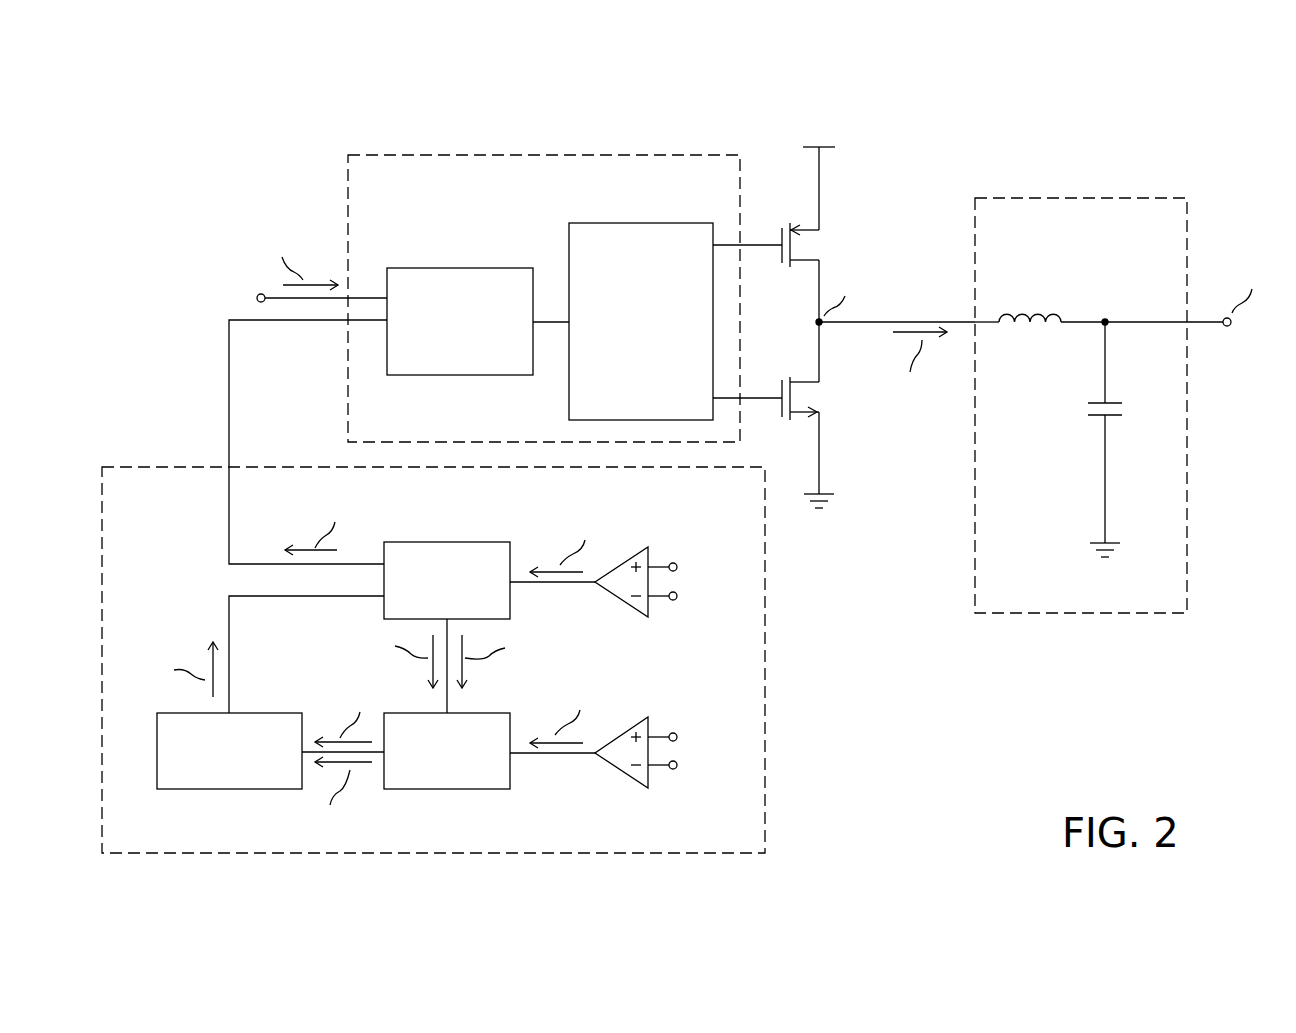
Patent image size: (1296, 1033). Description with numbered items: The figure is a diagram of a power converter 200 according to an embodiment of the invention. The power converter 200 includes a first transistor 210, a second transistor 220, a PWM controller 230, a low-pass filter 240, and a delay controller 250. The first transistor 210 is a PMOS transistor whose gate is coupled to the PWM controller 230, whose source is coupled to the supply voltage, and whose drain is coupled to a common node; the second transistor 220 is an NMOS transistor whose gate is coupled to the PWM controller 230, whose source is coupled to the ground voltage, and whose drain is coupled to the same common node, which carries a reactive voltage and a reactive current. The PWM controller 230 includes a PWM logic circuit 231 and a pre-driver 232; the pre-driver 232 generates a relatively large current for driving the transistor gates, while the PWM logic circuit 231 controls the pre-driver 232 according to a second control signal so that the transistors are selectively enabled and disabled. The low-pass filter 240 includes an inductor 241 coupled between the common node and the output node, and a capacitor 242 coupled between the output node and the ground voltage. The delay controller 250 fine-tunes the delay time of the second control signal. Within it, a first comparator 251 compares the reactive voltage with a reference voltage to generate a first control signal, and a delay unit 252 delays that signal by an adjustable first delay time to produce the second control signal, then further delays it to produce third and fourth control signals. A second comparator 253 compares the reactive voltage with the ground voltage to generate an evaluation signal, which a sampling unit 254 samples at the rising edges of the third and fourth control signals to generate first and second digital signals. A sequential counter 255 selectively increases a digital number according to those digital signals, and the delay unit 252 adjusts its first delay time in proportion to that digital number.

The power converter 200 is at (208, 134).
The PWM controller 230 is at (533, 155).
The PWM logic circuit 231 is at (462, 268).
The pre-driver 232 is at (643, 223).
The first transistor 210 is at (820, 247).
The second transistor 220 is at (821, 395).
The low-pass filter 240 is at (1095, 197).
The inductor 241 is at (1032, 311).
The capacitor 242 is at (1119, 400).
The delay controller 250 is at (143, 467).
The first comparator 251 is at (620, 600).
The delay unit 252 is at (453, 542).
The second comparator 253 is at (620, 770).
The sampling unit 254 is at (445, 790).
The sequential counter 255 is at (254, 711).